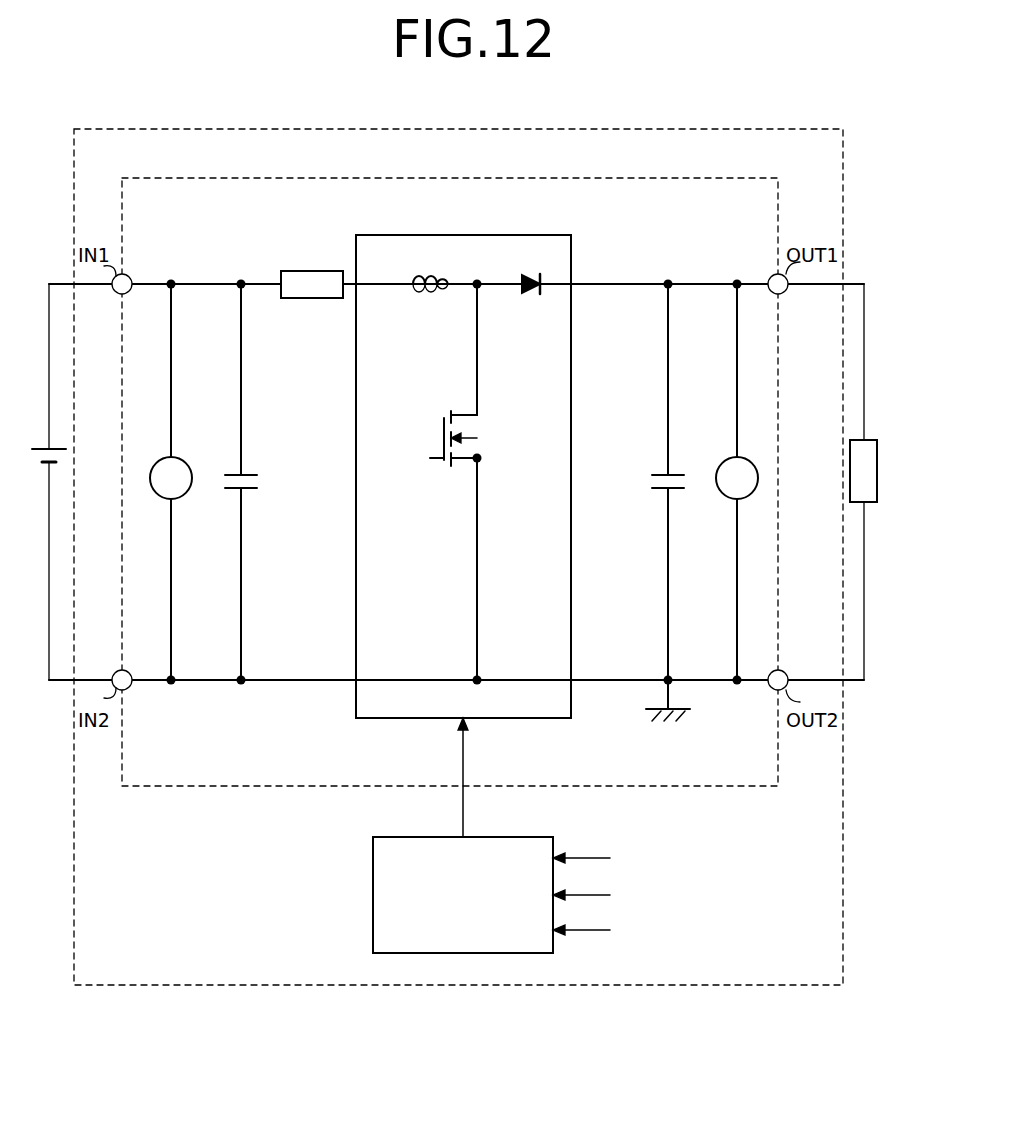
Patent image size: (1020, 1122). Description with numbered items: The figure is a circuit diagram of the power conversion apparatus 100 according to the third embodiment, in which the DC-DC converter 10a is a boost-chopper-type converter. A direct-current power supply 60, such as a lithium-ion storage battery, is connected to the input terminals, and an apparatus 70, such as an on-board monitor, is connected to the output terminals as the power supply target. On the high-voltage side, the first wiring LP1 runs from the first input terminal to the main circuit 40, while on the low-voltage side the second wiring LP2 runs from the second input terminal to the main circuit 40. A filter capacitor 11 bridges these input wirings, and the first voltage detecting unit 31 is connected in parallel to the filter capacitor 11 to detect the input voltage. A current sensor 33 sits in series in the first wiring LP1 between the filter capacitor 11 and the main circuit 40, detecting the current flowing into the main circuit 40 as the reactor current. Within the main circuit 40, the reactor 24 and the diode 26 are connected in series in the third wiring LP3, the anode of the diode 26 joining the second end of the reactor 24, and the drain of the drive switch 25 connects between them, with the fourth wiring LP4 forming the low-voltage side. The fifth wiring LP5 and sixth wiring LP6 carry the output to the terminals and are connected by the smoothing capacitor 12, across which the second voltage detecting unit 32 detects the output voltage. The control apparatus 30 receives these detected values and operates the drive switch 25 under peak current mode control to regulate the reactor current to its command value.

The power conversion apparatus 100 is at (545, 129).
The DC-DC converter 10a is at (545, 178).
The main circuit 40 is at (470, 236).
The current sensor 33 is at (300, 271).
The reactor 24 is at (432, 293).
The diode 26 is at (531, 294).
The drive switch 25 is at (441, 429).
The direct-current power supply 60 is at (37, 448).
The first voltage detecting unit 31 is at (158, 463).
The filter capacitor 11 is at (230, 475).
The smoothing capacitor 12 is at (672, 475).
The second voltage detecting unit 32 is at (749, 464).
The apparatus 70 is at (878, 446).
The control apparatus 30 is at (493, 837).
The first wiring LP1 is at (200, 282).
The second wiring LP2 is at (200, 682).
The third wiring LP3 is at (388, 290).
The fourth wiring LP4 is at (416, 676).
The fifth wiring LP5 is at (596, 280).
The sixth wiring LP6 is at (600, 690).